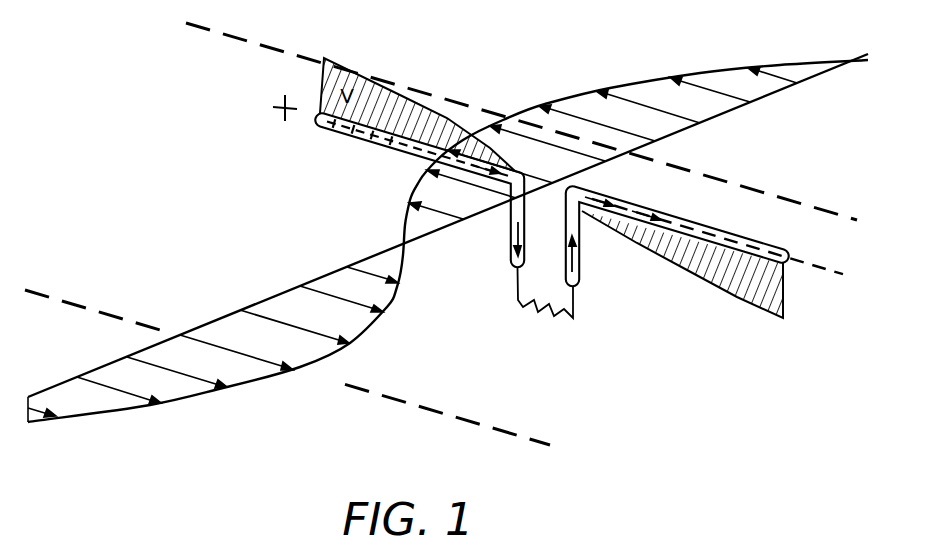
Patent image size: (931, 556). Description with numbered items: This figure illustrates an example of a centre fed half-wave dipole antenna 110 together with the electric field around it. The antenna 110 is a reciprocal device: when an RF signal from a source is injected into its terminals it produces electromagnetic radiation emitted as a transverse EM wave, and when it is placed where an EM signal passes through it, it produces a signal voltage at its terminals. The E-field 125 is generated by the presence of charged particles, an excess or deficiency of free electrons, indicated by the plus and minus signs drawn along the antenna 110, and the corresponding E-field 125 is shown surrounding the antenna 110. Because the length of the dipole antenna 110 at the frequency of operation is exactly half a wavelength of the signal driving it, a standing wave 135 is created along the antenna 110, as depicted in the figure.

The dipole antenna 110 is at (579, 271).
The E-field 125 is at (163, 262).
The standing wave 135 is at (763, 295).